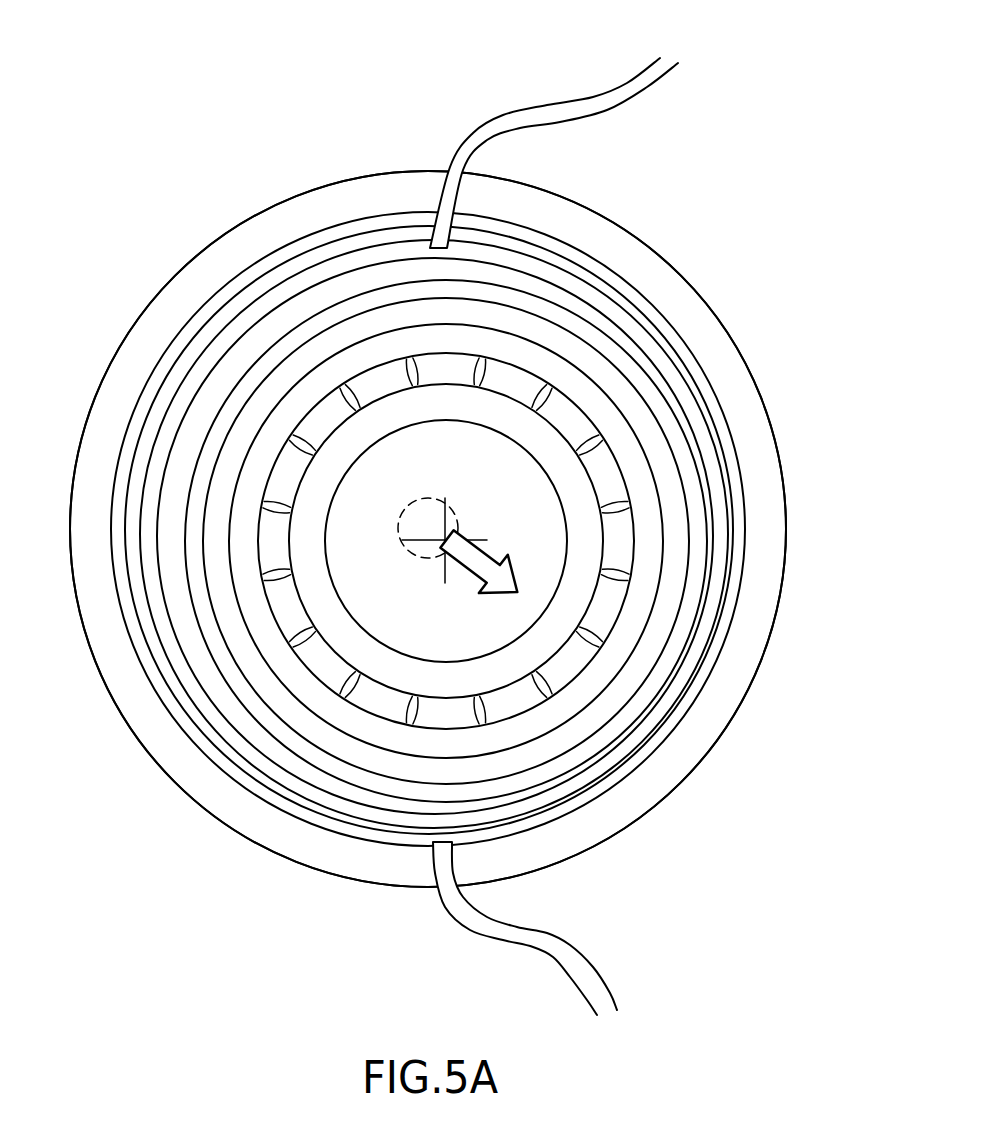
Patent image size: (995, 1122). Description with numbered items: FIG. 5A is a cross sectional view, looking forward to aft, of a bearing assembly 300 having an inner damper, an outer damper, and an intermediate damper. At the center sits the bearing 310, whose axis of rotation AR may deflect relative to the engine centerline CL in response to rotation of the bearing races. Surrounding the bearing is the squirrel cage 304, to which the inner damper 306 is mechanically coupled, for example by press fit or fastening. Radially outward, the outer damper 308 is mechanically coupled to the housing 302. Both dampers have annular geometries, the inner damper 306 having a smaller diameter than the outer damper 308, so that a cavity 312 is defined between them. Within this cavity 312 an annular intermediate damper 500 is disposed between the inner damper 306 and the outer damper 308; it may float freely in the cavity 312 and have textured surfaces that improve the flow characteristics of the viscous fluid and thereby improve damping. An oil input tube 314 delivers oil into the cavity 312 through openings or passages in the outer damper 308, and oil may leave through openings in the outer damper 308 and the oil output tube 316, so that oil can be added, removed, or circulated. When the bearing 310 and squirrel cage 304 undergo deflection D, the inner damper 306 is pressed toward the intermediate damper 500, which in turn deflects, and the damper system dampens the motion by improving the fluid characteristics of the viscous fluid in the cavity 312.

The bearing assembly 300 is at (150, 74).
The housing 302 is at (217, 258).
The squirrel cage 304 is at (400, 317).
The inner damper 306 is at (548, 308).
The outer damper 308 is at (660, 320).
The bearing 310 is at (608, 478).
The cavity 312 is at (330, 293).
The oil input tube 314 is at (630, 95).
The oil output tube 316 is at (570, 957).
The intermediate damper 500 is at (212, 355).
The engine centerline CL is at (423, 500).
The axis of rotation AR is at (445, 573).
The deflection D is at (470, 577).